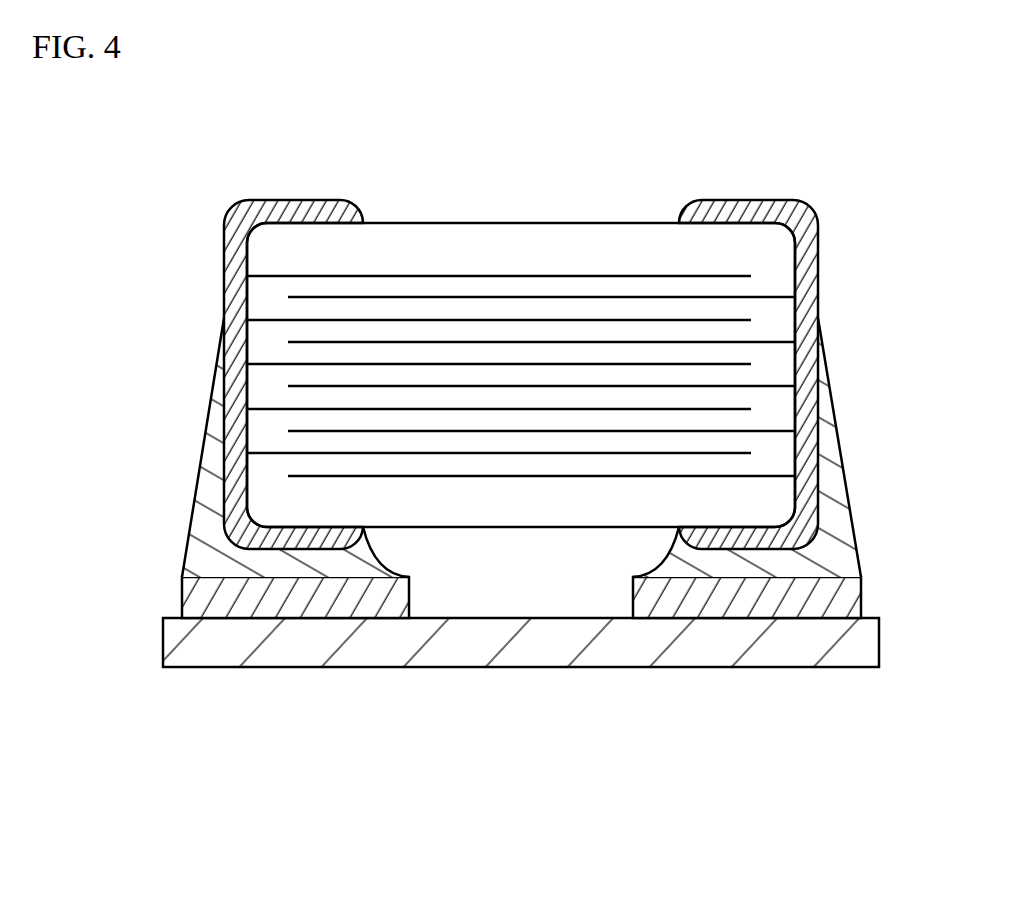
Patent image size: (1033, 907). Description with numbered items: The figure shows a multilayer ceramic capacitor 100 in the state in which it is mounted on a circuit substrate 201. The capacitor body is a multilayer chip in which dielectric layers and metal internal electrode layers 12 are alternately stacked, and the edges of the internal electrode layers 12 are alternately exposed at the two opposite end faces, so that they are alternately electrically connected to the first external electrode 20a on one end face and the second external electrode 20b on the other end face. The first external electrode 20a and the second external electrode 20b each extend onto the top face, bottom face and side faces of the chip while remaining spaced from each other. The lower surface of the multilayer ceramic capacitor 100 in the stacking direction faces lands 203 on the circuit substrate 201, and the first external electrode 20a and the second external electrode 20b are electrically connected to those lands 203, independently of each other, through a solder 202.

The multilayer ceramic capacitor 100 is at (743, 138).
The internal electrode layers 12 is at (480, 298).
The first external electrode 20a is at (245, 200).
The second external electrode 20b is at (785, 198).
The circuit substrate 201 is at (372, 648).
The solder 202 is at (202, 512).
The land 203 is at (185, 593).